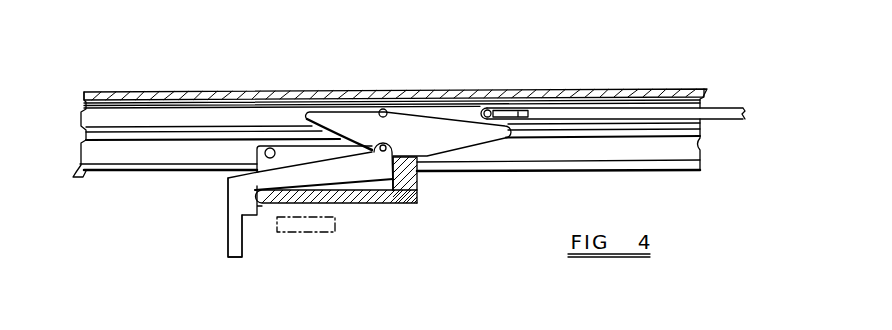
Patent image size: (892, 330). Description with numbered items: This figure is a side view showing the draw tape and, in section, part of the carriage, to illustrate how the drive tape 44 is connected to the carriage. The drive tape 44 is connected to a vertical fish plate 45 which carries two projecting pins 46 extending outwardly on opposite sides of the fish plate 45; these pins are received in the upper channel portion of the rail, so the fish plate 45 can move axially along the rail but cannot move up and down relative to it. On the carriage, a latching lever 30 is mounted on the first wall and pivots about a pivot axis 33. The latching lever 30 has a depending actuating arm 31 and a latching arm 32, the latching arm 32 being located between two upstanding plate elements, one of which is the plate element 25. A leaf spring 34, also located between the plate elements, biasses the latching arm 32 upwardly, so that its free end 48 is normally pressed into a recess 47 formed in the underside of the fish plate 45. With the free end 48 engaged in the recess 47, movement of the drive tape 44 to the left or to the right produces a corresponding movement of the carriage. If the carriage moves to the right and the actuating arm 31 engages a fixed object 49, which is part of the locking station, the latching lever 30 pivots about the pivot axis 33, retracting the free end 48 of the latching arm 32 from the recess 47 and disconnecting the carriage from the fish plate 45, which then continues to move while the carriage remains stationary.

The upstanding plate element 25 is at (398, 182).
The latching lever 30 is at (230, 229).
The actuating arm 31 is at (228, 242).
The latching arm 32 is at (315, 175).
The pivot axis 33 is at (289, 175).
The leaf spring 34 is at (348, 182).
The drive tape 44 is at (723, 109).
The fish plate 45 is at (469, 121).
The projecting pins 46 is at (380, 109).
The recess 47 is at (388, 142).
The free end 48 is at (397, 158).
The fixed object 49 is at (285, 231).